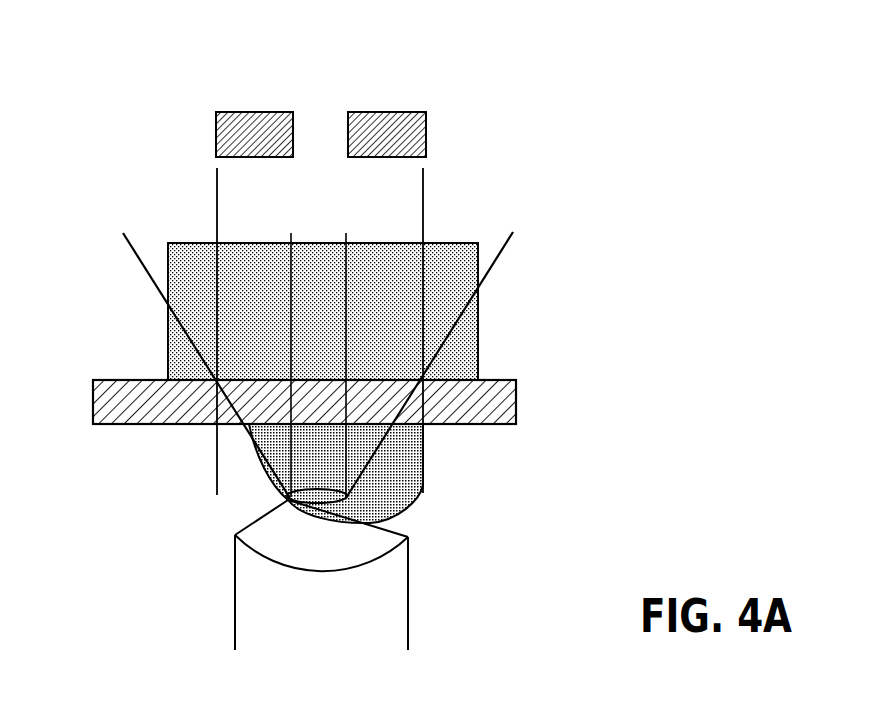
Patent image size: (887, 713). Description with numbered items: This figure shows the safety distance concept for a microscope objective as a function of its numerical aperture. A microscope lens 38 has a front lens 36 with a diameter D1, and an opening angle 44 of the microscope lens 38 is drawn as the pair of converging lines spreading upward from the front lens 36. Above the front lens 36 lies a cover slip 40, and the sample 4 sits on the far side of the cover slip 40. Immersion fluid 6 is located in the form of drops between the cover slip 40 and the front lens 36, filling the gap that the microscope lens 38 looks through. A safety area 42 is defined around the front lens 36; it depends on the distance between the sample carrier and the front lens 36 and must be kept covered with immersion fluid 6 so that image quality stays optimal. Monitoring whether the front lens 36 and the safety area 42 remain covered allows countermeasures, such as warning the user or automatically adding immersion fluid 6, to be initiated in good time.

The sample 4 is at (452, 263).
The immersion fluid 6 is at (400, 490).
The front lens 36 is at (285, 500).
The microscope lens 38 is at (367, 620).
The cover slip 40 is at (497, 408).
The safety area 42 is at (217, 83).
The opening angle 44 is at (142, 268).
The diameter of the front lens D1 is at (290, 222).